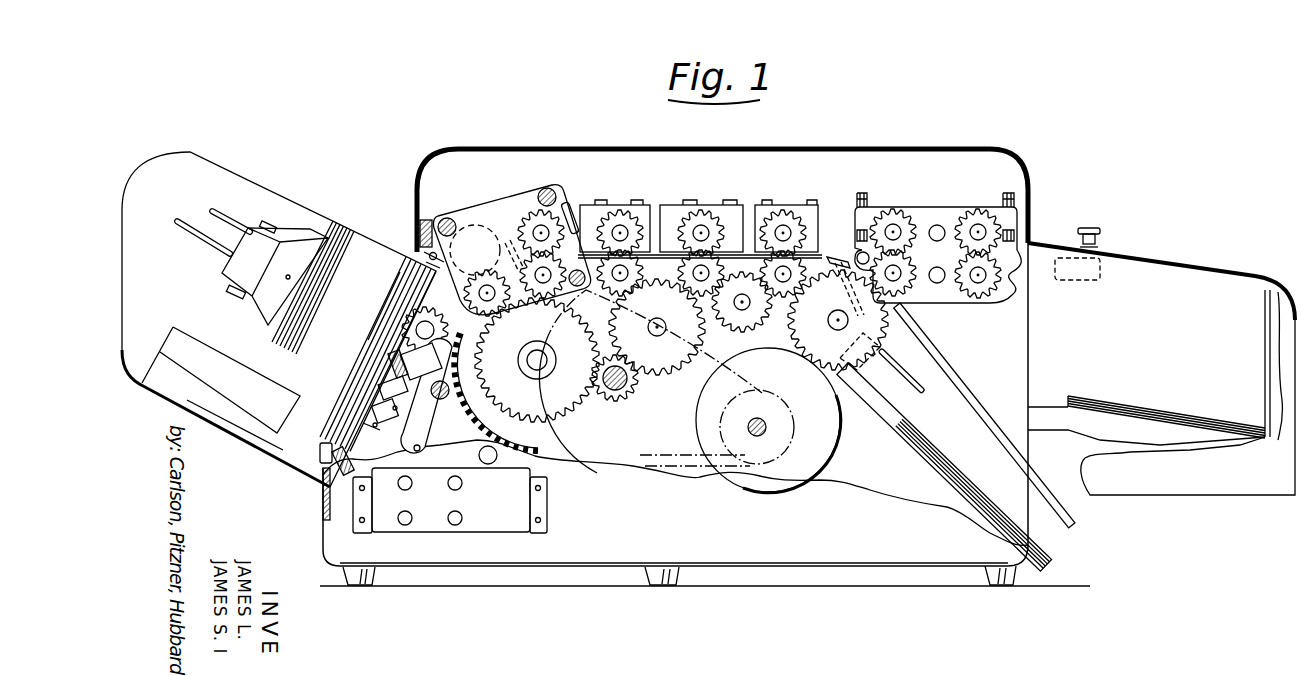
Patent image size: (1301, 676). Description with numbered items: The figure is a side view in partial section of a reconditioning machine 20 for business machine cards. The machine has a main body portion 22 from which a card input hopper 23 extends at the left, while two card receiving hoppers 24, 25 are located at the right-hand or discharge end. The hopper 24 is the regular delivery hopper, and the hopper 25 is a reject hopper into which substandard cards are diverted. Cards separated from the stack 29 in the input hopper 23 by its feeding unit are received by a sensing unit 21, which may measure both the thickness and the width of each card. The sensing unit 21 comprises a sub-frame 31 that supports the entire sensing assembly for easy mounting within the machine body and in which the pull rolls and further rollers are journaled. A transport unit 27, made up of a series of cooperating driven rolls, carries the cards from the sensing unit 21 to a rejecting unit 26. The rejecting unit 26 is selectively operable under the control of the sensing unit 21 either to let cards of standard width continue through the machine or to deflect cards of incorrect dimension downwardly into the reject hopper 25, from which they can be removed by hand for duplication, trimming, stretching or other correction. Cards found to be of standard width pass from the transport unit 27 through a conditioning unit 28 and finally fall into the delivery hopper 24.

The machine 20 is at (546, 121).
The sensing unit 21 is at (473, 199).
The main body portion 22 is at (712, 146).
The card input hopper 23 is at (438, 345).
The card receiving hopper 24 is at (1185, 493).
The reject hopper 25 is at (913, 432).
The rejecting unit 26 is at (836, 252).
The transport unit 27 is at (655, 204).
The conditioning unit 28 is at (929, 205).
The stack 29 is at (368, 250).
The sub-frame 31 is at (520, 195).